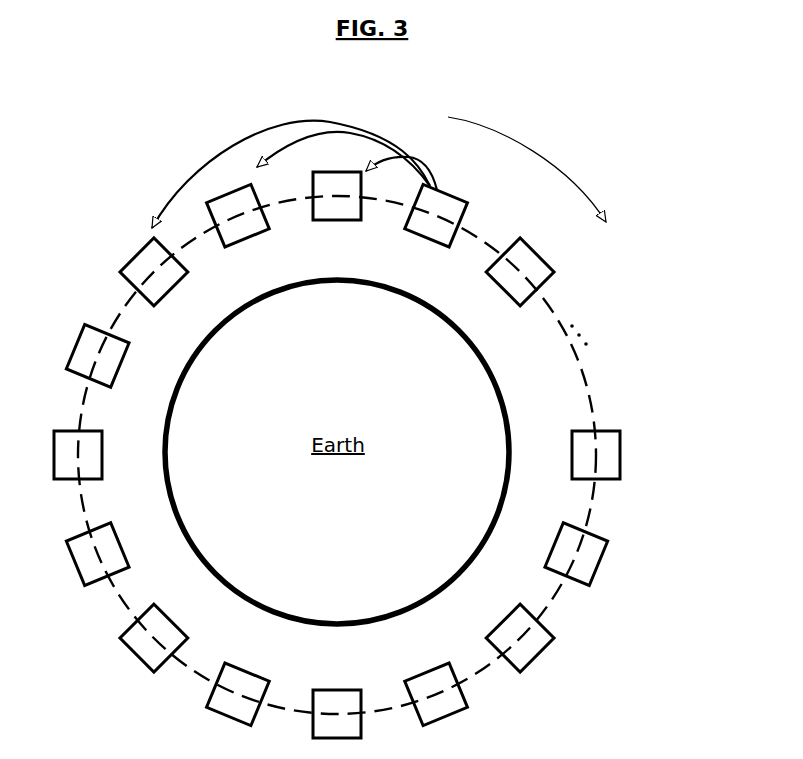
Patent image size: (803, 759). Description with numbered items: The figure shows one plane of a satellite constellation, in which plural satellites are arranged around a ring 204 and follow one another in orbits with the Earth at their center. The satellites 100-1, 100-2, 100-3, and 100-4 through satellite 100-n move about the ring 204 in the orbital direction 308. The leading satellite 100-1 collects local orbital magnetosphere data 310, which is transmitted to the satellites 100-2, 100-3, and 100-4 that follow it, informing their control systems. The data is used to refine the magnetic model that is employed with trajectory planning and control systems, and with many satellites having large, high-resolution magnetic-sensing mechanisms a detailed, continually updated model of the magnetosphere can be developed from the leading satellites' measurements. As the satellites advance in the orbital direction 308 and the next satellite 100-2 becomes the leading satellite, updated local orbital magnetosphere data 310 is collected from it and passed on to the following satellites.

The leading satellite 100-1 is at (457, 198).
The satellite 100-2 is at (345, 221).
The satellite 100-3 is at (250, 236).
The satellite 100-4 is at (166, 283).
The satellite 100-n is at (528, 281).
The ring 204 is at (587, 379).
The orbital direction 308 is at (537, 169).
The local orbital magnetosphere data 310 is at (336, 120).